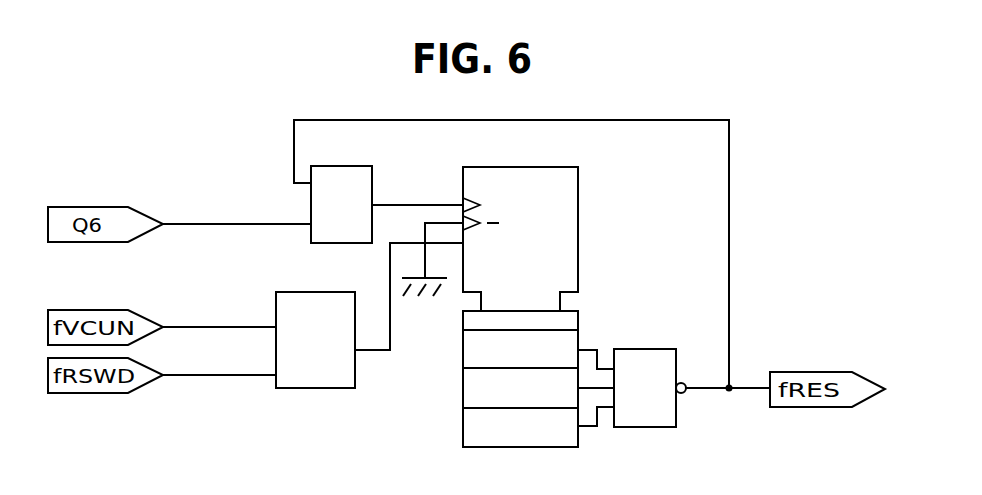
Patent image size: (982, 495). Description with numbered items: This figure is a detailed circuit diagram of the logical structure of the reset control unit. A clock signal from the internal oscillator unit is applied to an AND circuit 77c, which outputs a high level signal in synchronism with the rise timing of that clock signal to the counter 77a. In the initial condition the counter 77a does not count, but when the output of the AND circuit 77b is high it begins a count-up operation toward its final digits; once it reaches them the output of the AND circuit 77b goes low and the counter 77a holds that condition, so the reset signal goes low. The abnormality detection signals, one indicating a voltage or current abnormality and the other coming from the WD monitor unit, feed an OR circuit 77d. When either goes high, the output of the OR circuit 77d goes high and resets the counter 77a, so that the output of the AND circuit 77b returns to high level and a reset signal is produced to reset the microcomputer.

The counter 77a is at (553, 167).
The AND circuit 77b is at (665, 349).
The AND circuit 77c is at (358, 166).
The OR circuit 77d is at (328, 292).